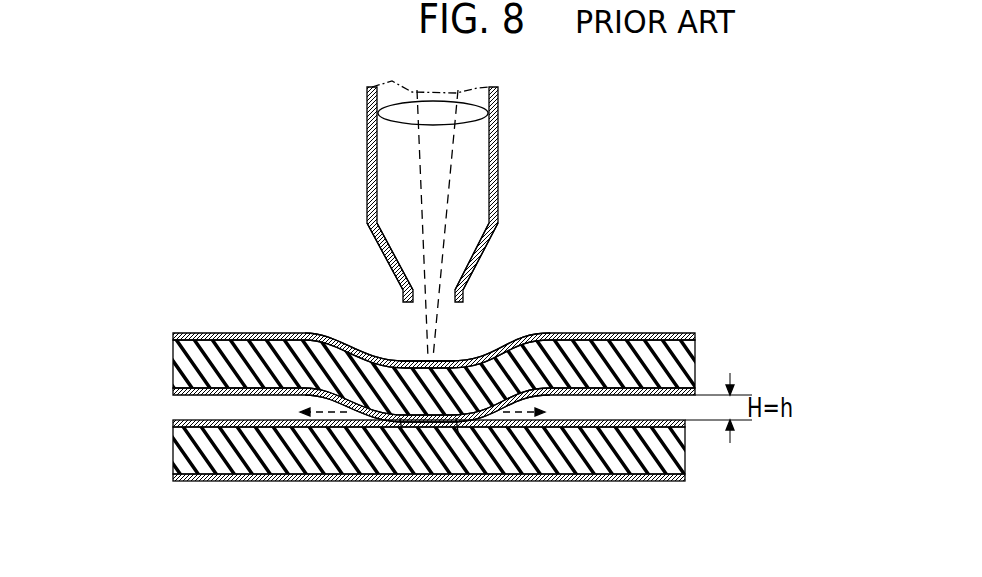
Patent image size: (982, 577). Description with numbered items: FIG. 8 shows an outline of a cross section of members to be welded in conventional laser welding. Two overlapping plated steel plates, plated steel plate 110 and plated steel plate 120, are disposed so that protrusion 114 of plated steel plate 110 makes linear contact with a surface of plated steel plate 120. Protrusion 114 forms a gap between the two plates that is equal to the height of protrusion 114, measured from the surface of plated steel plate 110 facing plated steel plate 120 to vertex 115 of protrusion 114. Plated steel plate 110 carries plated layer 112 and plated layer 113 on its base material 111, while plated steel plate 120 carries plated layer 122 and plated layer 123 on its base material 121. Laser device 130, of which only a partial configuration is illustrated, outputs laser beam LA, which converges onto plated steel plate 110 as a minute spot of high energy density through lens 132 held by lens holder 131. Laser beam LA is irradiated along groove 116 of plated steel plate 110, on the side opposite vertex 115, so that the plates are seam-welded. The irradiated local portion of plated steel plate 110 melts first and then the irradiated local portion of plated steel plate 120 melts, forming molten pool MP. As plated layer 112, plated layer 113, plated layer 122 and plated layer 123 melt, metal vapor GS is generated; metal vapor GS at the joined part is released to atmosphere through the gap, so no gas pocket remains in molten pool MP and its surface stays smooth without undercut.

The plated steel plate 110 is at (417, 340).
The base material of upper member 111 is at (215, 355).
The plated layer 112 is at (173, 391).
The plated layer 113 is at (173, 336).
The protrusion 114 is at (372, 377).
The vertex 115 is at (430, 413).
The groove 116 is at (408, 362).
The plated steel plate 120 is at (411, 482).
The base material of lower member 121 is at (233, 470).
The plated layer 122 is at (173, 423).
The plated layer 123 is at (173, 478).
The laser device 130 is at (484, 190).
The lens holder 131 is at (483, 255).
The lens 132 is at (468, 115).
The laser beam LA is at (418, 173).
The metal vapor GS is at (424, 409).
The molten pool MP is at (405, 473).